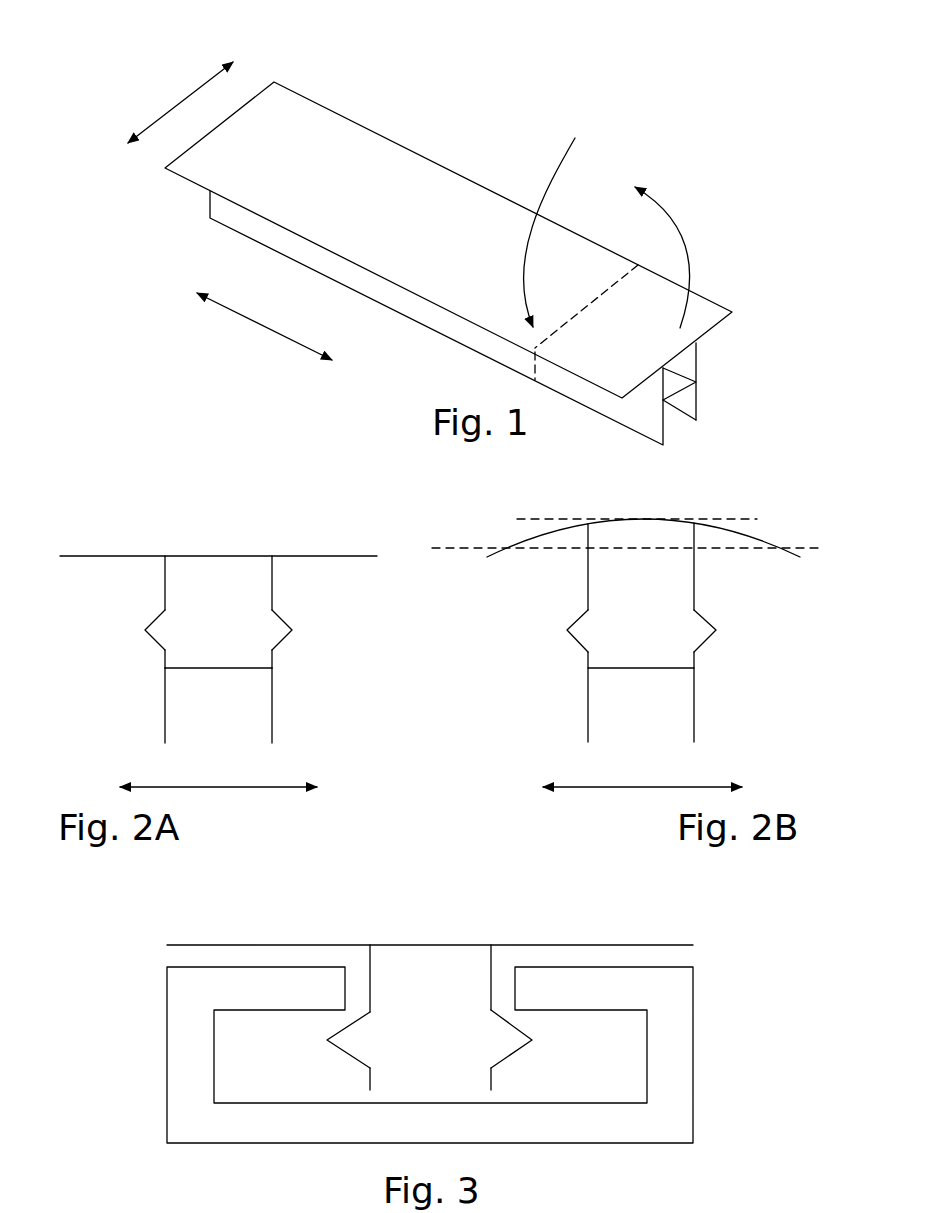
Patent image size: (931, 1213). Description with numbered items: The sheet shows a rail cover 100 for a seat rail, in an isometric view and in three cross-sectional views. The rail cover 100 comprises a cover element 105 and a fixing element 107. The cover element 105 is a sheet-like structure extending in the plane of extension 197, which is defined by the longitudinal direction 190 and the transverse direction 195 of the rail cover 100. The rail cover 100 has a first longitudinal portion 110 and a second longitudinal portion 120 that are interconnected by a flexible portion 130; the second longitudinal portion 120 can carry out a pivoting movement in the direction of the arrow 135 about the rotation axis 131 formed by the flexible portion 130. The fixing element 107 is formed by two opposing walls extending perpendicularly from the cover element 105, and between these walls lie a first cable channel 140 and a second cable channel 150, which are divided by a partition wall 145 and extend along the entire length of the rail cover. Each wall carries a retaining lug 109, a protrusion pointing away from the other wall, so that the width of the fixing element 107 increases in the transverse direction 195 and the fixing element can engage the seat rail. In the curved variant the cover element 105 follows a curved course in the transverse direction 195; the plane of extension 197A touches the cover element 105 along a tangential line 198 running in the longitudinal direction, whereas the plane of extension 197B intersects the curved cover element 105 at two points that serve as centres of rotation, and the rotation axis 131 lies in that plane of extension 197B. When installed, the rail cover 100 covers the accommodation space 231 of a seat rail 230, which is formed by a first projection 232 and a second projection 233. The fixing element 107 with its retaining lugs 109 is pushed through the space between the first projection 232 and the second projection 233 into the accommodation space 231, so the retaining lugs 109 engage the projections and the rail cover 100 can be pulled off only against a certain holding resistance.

In FIG. 1, the rail cover 100 is at (418, 112).
In FIG. 2A, the rail cover 100 is at (145, 535).
In FIG. 2B, the rail cover 100 is at (507, 532).
In FIG. 3, the rail cover 100 is at (412, 898).
In FIG. 1, the cover element 105 is at (312, 100).
In FIG. 2A, the cover element 105 is at (290, 555).
In FIG. 2B, the cover element 105 is at (760, 535).
In FIG. 3, the cover element 105 is at (295, 943).
In FIG. 1, the fixing element 107 is at (698, 360).
In FIG. 2A, the fixing element 107 is at (273, 573).
In FIG. 2B, the fixing element 107 is at (697, 557).
In FIG. 3, the fixing element 107 is at (492, 963).
In FIG. 2A, the retaining lug 109 is at (157, 617).
In FIG. 2B, the retaining lug 109 is at (641, 631).
In FIG. 3, the retaining lug 109 is at (340, 1050).
In FIG. 1, the first longitudinal portion 110 is at (473, 218).
In FIG. 1, the second longitudinal portion 120 is at (620, 368).
In FIG. 1, the flexible portion 130 is at (561, 222).
In FIG. 1, the rotation axis 131 is at (557, 327).
In FIG. 2B, the rotation axis 131 is at (735, 543).
In FIG. 1, the arrow 135 is at (672, 235).
In FIG. 1, the first cable channel 140 is at (683, 366).
In FIG. 2A, the first cable channel 140 is at (240, 652).
In FIG. 2B, the first cable channel 140 is at (672, 595).
In FIG. 2A, the partition wall 145 is at (187, 670).
In FIG. 1, the second cable channel 150 is at (673, 420).
In FIG. 2A, the second cable channel 150 is at (248, 713).
In FIG. 2B, the second cable channel 150 is at (672, 690).
In FIG. 1, the longitudinal direction 190 is at (258, 325).
In FIG. 1, the transverse direction 195 is at (182, 100).
In FIG. 2A, the transverse direction 195 is at (283, 788).
In FIG. 2B, the transverse direction 195 is at (577, 788).
In FIG. 1, the plane of extension 197 is at (213, 165).
In FIG. 2B, the plane of extension 197A is at (545, 520).
In FIG. 2B, the plane of extension 197B is at (657, 548).
In FIG. 2B, the tangential line 198 is at (520, 552).
In FIG. 3, the seat rail 230 is at (695, 1053).
In FIG. 3, the accommodation space 231 is at (593, 1077).
In FIG. 3, the first projection 232 is at (215, 993).
In FIG. 3, the second projection 233 is at (582, 978).